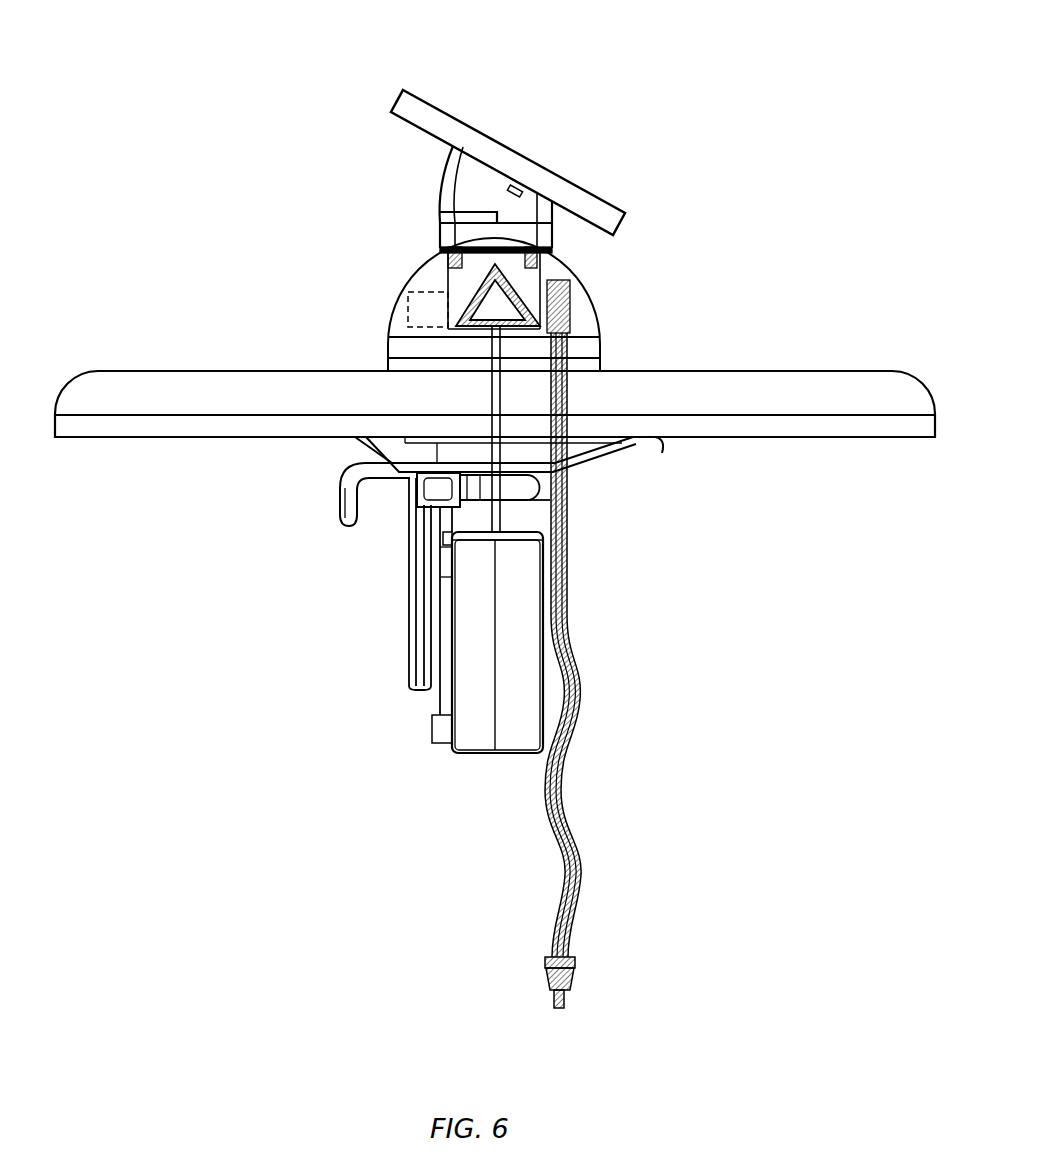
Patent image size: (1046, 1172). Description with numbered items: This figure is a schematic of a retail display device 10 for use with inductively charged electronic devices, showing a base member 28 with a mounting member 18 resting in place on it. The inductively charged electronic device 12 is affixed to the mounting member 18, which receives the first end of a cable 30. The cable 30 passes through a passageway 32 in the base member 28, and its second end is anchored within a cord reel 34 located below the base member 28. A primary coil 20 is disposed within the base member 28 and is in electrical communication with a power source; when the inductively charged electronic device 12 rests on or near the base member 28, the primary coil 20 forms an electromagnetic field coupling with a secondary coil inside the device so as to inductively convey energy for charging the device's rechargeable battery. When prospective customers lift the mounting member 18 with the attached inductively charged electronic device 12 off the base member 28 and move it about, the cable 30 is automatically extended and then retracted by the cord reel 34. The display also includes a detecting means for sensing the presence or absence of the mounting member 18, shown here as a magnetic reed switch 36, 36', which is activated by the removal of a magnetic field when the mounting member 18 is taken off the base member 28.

The retail display device 10 is at (624, 70).
The inductively charged electronic device 12 is at (618, 206).
The mounting member 18 is at (447, 185).
The primary coil 20 is at (410, 318).
The base member 28 is at (402, 305).
The cable 30 is at (490, 403).
The passageway 32 is at (438, 250).
The cord reel 34 is at (467, 750).
The magnetic reed switch 36 is at (584, 662).
The magnetic reed switch 36' is at (579, 256).